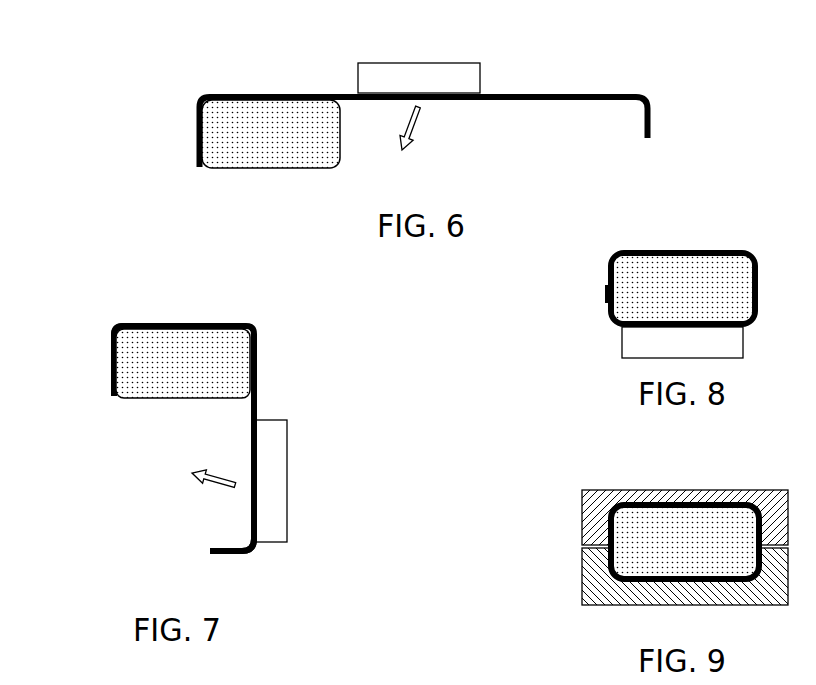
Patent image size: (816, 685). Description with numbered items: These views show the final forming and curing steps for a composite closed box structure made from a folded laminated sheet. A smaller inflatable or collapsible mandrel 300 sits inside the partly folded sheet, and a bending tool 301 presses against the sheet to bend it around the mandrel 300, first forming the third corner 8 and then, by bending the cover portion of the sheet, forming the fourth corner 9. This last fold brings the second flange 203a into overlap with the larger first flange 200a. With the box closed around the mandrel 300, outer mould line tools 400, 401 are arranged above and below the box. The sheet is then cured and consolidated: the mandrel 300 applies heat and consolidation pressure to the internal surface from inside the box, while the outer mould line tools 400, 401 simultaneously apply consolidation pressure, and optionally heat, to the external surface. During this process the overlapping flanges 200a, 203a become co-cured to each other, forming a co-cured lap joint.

In FIG. 7, the third corner 8 is at (252, 325).
In FIG. 8, the fourth corner 9 is at (757, 325).
In FIG. 7, the first flange 200a is at (111, 370).
In FIG. 7, the second flange 203a is at (227, 557).
In FIG. 6, the mandrel 300 is at (278, 168).
In FIG. 7, the mandrel 300 is at (170, 400).
In FIG. 8, the mandrel 300 is at (720, 260).
In FIG. 9, the mandrel 300 is at (687, 528).
In FIG. 6, the bending tool 301 is at (390, 62).
In FIG. 7, the bending tool 301 is at (287, 480).
In FIG. 8, the bending tool 301 is at (627, 343).
In FIG. 9, the outer mould line tool 400 is at (618, 492).
In FIG. 9, the outer mould line tool 401 is at (598, 608).